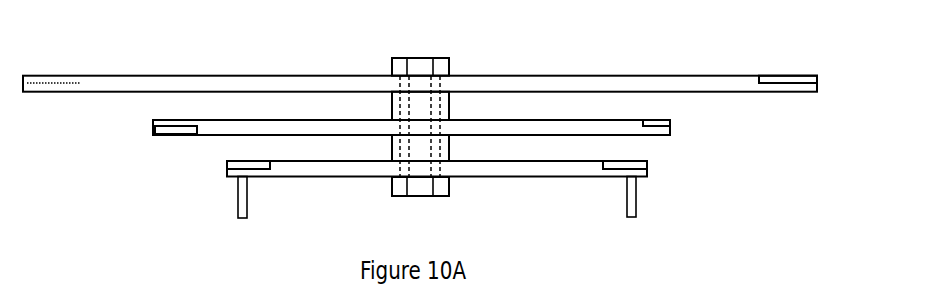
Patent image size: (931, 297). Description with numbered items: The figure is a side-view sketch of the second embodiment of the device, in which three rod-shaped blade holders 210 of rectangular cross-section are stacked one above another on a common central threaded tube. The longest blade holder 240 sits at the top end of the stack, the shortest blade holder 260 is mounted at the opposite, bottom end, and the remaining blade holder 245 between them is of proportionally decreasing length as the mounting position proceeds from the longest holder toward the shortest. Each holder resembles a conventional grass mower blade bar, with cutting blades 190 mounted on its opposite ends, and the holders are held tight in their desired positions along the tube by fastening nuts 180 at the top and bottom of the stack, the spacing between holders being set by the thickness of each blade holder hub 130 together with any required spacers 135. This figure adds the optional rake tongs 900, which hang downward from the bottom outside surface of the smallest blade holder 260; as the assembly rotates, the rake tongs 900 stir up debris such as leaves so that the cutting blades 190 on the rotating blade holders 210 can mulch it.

The longest blade holder 240 is at (315, 75).
The remaining blade holder 245 is at (155, 123).
The shortest blade holder 260 is at (236, 178).
The cutting blade 190 is at (227, 166).
The blade holder 210 is at (550, 92).
The nuts 180 is at (450, 62).
The blade holder hub 130 is at (450, 105).
The spacer 135 is at (438, 153).
The rake tongs 900 is at (235, 206).